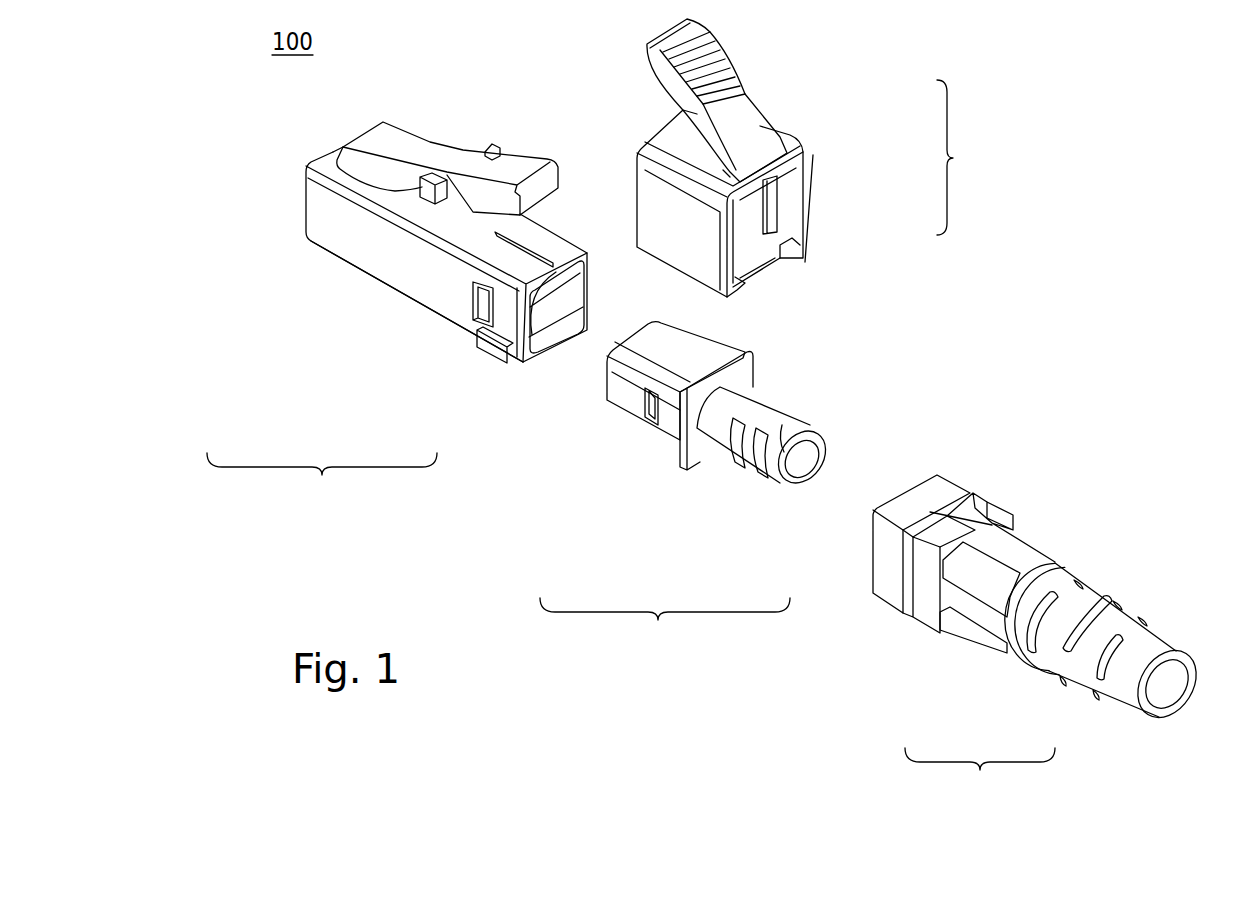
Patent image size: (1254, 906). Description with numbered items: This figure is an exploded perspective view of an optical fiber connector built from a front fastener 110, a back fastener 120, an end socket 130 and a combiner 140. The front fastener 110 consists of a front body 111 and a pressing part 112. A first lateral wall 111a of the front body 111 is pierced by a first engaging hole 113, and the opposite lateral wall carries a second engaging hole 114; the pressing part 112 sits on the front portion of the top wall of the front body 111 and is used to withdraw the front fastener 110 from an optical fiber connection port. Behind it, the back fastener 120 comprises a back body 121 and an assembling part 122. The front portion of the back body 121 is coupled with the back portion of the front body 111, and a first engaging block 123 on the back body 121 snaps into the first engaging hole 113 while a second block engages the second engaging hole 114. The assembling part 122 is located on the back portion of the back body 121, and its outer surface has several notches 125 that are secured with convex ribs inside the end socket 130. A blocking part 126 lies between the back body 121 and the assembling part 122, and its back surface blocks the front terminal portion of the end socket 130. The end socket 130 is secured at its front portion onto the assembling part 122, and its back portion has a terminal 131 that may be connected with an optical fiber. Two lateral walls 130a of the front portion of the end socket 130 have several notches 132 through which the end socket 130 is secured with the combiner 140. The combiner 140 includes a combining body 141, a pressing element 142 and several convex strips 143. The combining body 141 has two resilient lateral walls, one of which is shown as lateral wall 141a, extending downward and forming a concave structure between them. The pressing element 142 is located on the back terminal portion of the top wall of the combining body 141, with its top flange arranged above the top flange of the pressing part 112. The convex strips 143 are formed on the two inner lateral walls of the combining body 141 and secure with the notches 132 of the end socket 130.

The front fastener 110 is at (322, 483).
The front body 111 is at (318, 222).
The first lateral wall 111a is at (417, 287).
The pressing part 112 is at (478, 165).
The first engaging hole 113 is at (483, 303).
The second engaging hole 114 is at (477, 330).
The back fastener 120 is at (665, 627).
The back body 121 is at (620, 390).
The assembling part 122 is at (747, 453).
The first engaging block 123 is at (650, 397).
The notches 125 is at (793, 450).
The blocking part 126 is at (697, 453).
The end socket 130 is at (980, 777).
The lateral walls 130a is at (888, 585).
The terminal 131 is at (1052, 662).
The notches 132 is at (910, 597).
The combiner 140 is at (971, 157).
The combining body 141 is at (807, 167).
The clip side plate 141a is at (790, 212).
The pressing element 142 is at (737, 55).
The convex strips 143 is at (770, 198).